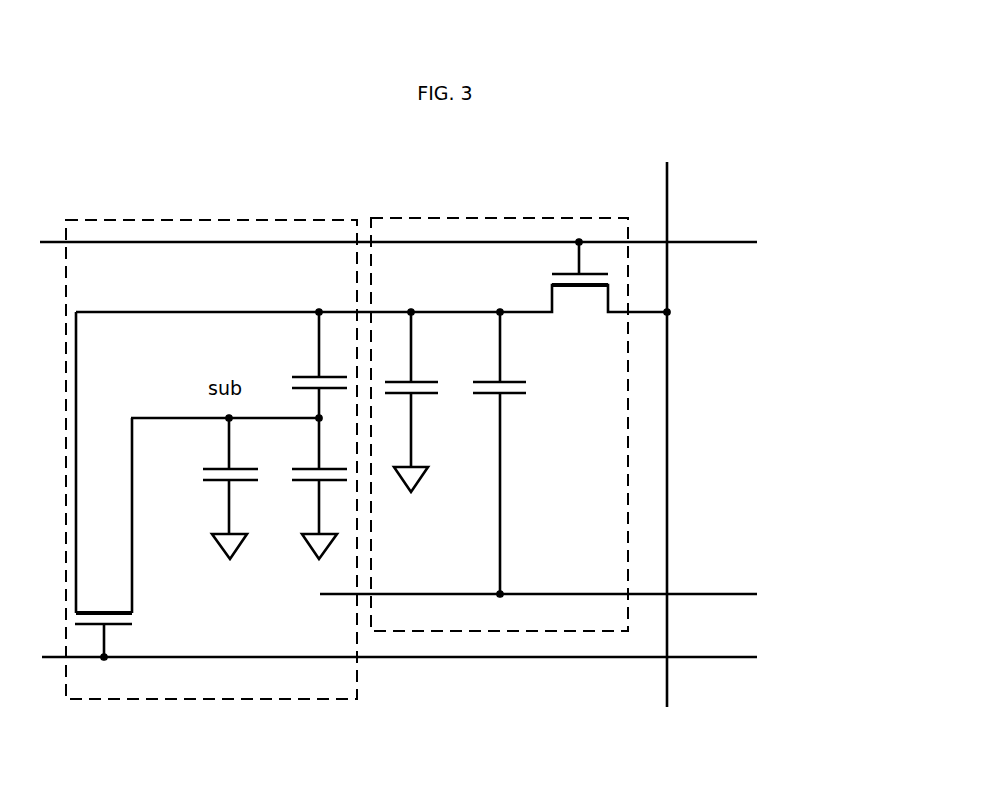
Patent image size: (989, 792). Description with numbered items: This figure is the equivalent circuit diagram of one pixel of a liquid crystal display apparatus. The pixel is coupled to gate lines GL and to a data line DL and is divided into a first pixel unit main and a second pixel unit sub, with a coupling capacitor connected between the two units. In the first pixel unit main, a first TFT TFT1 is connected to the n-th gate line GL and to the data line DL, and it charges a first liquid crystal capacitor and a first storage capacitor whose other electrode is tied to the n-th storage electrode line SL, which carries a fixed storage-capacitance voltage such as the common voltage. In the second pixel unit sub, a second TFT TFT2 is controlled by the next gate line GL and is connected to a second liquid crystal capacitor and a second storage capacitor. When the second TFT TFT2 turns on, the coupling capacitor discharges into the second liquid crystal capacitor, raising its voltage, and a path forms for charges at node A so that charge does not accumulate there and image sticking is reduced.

The second pixel unit sub is at (211, 447).
The first pixel unit main is at (499, 413).
The gate line GL is at (444, 437).
The storage electrode line SL is at (568, 581).
The data line DL is at (667, 422).
The first TFT TFT1 is at (550, 263).
The second TFT TFT2 is at (133, 486).
The node A is at (329, 418).